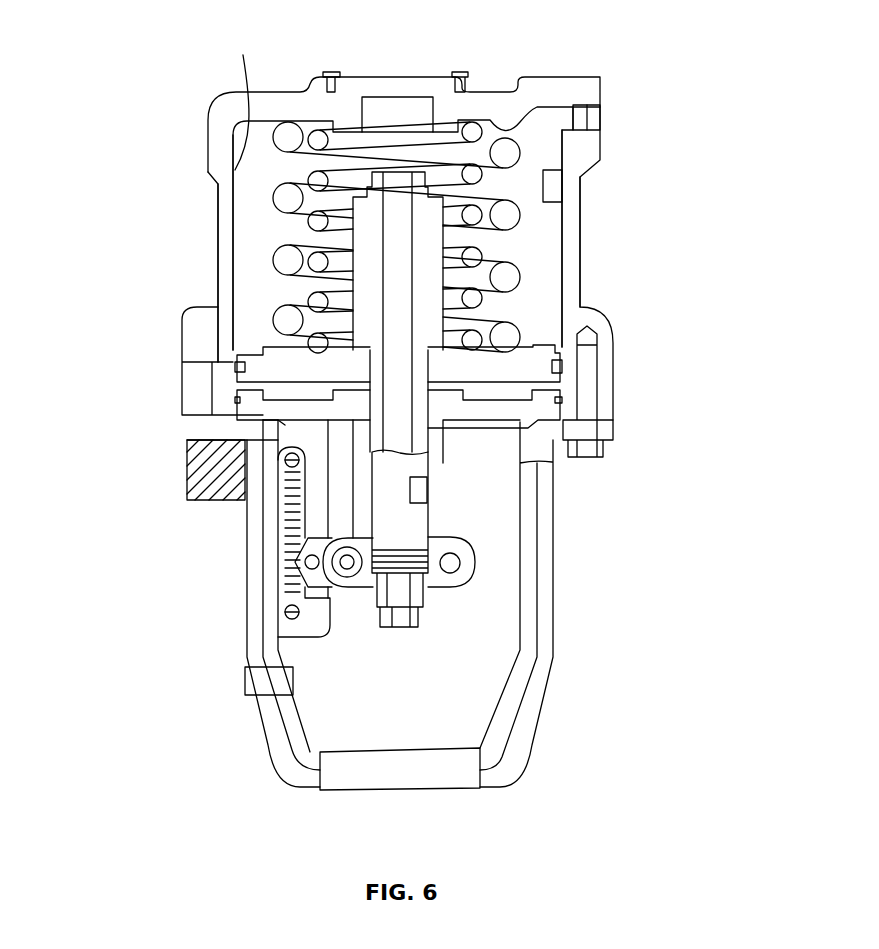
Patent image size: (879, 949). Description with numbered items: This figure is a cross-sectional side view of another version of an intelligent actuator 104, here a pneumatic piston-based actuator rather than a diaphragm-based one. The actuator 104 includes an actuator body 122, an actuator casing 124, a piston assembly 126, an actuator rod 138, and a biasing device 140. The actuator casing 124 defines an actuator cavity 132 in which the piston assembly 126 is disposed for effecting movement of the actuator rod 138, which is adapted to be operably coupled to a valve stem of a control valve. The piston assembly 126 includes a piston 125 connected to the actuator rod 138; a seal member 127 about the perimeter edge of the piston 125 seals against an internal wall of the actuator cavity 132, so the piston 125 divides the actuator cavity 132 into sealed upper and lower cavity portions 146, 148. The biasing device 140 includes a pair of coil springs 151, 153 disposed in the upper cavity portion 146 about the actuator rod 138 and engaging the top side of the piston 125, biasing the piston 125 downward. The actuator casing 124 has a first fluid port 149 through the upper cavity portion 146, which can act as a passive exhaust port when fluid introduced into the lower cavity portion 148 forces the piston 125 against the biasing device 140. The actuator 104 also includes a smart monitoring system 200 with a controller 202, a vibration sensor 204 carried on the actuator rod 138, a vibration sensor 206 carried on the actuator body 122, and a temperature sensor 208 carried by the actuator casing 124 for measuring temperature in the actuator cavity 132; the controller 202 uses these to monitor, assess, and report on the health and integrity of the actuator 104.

The intelligent actuator 104 is at (583, 83).
The actuator body 122 is at (553, 594).
The actuator casing 124 is at (563, 232).
The piston 125 is at (515, 364).
The piston assembly 126 is at (270, 193).
The seal member 127 is at (237, 368).
The actuator cavity 132 is at (241, 100).
The actuator rod 138 is at (380, 512).
The biasing device 140 is at (522, 275).
The upper cavity portion 146 is at (245, 260).
The lower cavity portion 148 is at (235, 400).
The first fluid port 149 is at (600, 117).
The coil spring 151 is at (512, 150).
The coil spring 153 is at (474, 120).
The smart monitoring system 200 is at (160, 459).
The controller 202 is at (187, 487).
The vibration sensor 204 is at (418, 490).
The vibration sensor 206 is at (253, 680).
The temperature sensor 208 is at (553, 181).